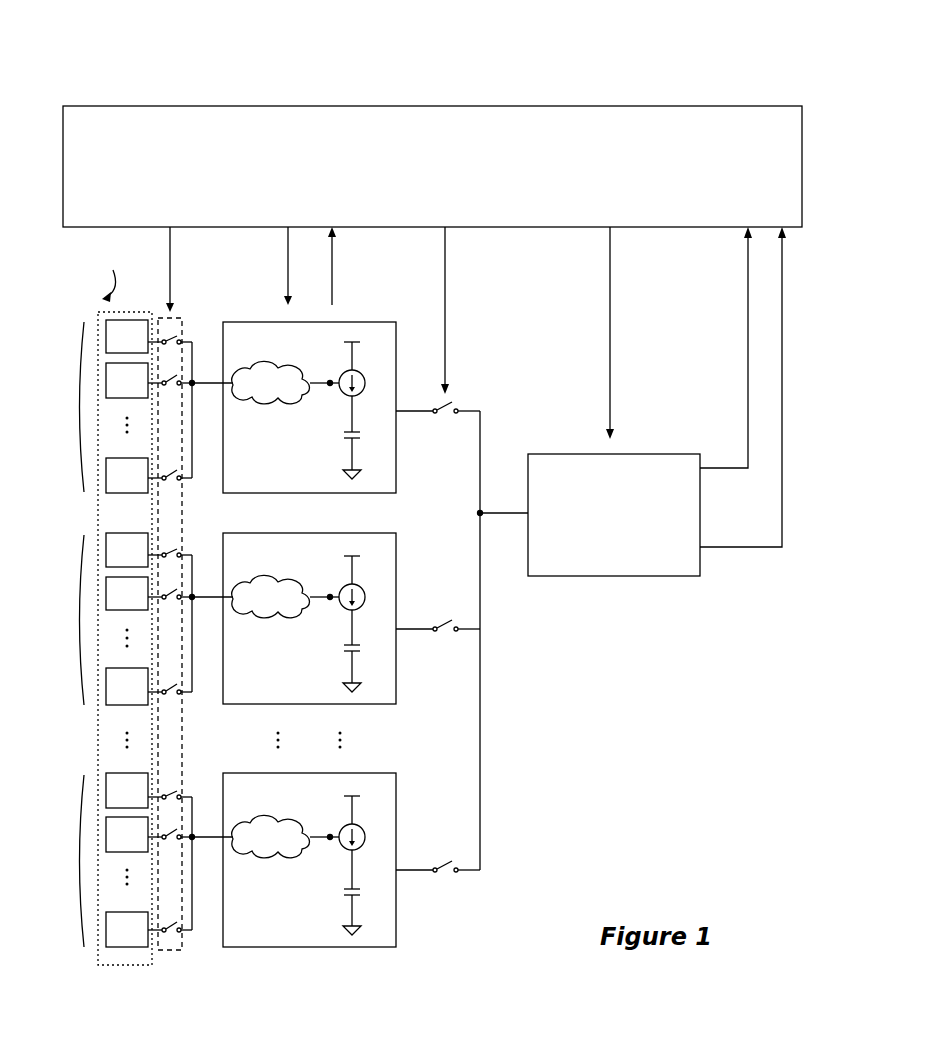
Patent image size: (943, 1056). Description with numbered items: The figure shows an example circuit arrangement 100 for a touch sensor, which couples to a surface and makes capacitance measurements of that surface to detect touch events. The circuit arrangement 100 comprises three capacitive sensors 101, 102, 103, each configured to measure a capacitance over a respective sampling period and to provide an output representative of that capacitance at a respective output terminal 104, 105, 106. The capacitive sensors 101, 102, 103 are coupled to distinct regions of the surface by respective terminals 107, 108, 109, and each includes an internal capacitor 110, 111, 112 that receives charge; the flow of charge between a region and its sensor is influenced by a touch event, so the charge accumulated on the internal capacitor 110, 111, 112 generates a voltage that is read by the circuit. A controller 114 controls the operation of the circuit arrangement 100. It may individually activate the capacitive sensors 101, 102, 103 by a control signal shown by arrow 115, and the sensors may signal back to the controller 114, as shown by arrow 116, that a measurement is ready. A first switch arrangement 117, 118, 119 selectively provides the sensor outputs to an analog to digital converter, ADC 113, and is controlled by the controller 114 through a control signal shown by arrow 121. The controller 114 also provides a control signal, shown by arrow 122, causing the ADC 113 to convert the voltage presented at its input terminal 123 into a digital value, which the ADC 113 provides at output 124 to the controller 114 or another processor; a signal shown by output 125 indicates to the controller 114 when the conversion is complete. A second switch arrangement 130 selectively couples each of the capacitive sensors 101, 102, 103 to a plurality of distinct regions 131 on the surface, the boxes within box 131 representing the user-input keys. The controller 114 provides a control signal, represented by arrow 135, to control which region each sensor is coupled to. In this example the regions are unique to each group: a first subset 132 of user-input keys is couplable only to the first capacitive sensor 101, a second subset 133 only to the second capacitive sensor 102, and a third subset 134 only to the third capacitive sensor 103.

The circuit arrangement 100 is at (104, 47).
The first capacitive sensor 101 is at (309, 383).
The second capacitive sensor 102 is at (307, 606).
The third capacitive sensor 103 is at (309, 846).
The output terminal 104 is at (415, 409).
The output terminal 105 is at (417, 627).
The output terminal 106 is at (417, 868).
The terminal 107 is at (213, 380).
The terminal 108 is at (213, 592).
The terminal 109 is at (213, 835).
The internal capacitor 110 is at (343, 435).
The internal capacitor 111 is at (343, 648).
The internal capacitor 112 is at (343, 892).
The analog to digital converter 113 is at (568, 478).
The controller 114 is at (405, 132).
The control signal 115 is at (288, 243).
The ready signal 116 is at (337, 255).
The first switch arrangement switch 117 is at (445, 417).
The first switch arrangement switch 118 is at (444, 633).
The first switch arrangement switch 119 is at (443, 877).
The control signal 121 is at (447, 325).
The control signal 122 is at (612, 308).
The input terminal 123 is at (513, 512).
The output 124 is at (785, 330).
The output 125 is at (745, 330).
The second switch arrangement 130 is at (170, 950).
The plurality of distinct regions 131 is at (112, 965).
The first subset 132 is at (61, 407).
The second subset 133 is at (61, 620).
The third subset 134 is at (61, 861).
The control signal 135 is at (172, 240).